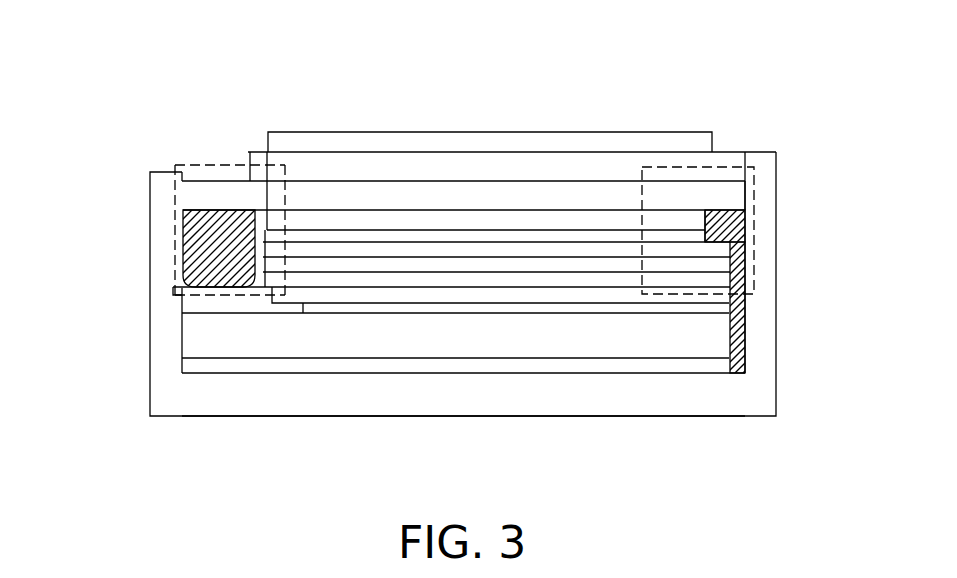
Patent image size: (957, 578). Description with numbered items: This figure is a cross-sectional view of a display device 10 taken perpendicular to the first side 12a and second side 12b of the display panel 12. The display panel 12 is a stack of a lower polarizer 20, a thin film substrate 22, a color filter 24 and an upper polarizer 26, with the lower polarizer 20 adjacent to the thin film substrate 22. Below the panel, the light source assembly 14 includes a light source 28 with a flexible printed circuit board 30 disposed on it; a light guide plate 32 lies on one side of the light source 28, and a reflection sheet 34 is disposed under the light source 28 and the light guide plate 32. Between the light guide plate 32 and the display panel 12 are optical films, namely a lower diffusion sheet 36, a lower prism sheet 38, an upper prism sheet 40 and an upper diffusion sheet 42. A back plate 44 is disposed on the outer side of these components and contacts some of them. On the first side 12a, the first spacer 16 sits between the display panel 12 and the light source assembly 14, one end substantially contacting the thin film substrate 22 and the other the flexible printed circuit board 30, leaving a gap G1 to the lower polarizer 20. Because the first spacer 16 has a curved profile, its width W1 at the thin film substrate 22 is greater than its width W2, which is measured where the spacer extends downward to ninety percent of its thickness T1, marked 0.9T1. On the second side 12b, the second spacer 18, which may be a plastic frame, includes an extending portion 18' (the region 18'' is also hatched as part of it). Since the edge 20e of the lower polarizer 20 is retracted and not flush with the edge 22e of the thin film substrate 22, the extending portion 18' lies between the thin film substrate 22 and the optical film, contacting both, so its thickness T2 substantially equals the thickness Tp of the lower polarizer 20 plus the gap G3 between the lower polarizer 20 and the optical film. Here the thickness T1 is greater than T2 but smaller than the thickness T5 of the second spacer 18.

The display device 10 is at (86, 67).
The display panel 12 is at (507, 77).
The first side 12a is at (173, 187).
The second side 12b is at (727, 165).
The light source assembly 14 is at (96, 303).
The first spacer 16 is at (207, 217).
The second spacer 18 is at (749, 497).
The extending portion 18' is at (736, 354).
The horizontal portion of second conductive structure 18'' is at (721, 343).
The lower polarizer 20 is at (337, 217).
The edge of the lower polarizer 20e is at (700, 218).
The thin film substrate 22 is at (385, 190).
The edge of the thin film substrate 22e is at (749, 190).
The color filter 24 is at (437, 163).
The upper polarizer 26 is at (485, 133).
The light source 28 is at (193, 343).
The flexible printed circuit board 30 is at (193, 304).
The light guide plate 32 is at (423, 343).
The reflection sheet 34 is at (372, 368).
The lower diffusion sheet 36 is at (473, 297).
The lower prism sheet 38 is at (523, 283).
The upper prism sheet 40 is at (570, 267).
The upper diffusion sheet 42 is at (618, 250).
The back plate 44 is at (165, 400).
The gap G1 is at (255, 210).
The gap G3 is at (403, 283).
The width W1 is at (183, 172).
The width W2 is at (248, 288).
The thickness T1 is at (183, 210).
The ninety percent of thickness T1 0.9T1 is at (183, 282).
The thickness T2 is at (718, 257).
The thickness Tp is at (541, 272).
The thickness T5 is at (745, 210).